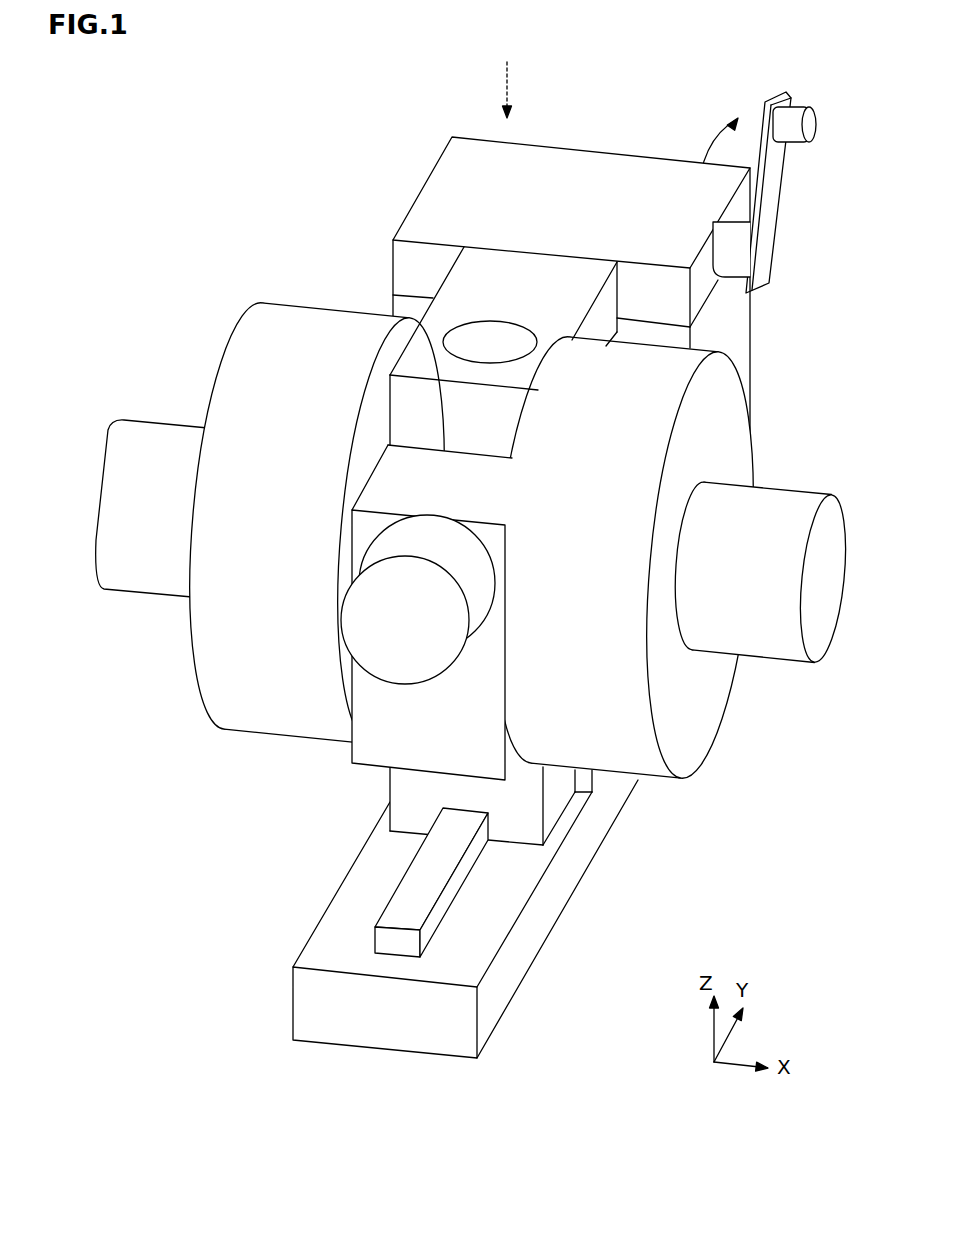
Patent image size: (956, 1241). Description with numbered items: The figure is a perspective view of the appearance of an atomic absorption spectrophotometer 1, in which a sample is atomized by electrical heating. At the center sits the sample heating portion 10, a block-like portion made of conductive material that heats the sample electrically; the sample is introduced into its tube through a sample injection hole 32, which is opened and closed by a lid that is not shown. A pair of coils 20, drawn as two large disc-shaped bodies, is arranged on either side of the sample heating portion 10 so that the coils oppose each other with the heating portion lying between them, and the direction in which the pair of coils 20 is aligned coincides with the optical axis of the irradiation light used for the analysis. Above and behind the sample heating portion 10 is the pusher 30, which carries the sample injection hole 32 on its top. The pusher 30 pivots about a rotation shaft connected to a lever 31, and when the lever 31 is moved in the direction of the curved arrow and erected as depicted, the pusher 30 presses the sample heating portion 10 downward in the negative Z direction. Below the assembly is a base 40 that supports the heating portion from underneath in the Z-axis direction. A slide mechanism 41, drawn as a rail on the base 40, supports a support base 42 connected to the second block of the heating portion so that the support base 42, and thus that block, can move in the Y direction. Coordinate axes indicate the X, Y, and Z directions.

The atomic absorption spectrophotometer 1 is at (298, 124).
The sample heating portion 10 is at (454, 488).
The pair of coils 20 is at (215, 693).
The pusher 30 is at (620, 175).
The lever 31 is at (771, 196).
The sample injection hole 32 is at (482, 320).
The base 40 is at (528, 942).
The slide mechanism 41 is at (425, 872).
The support base 42 is at (407, 813).